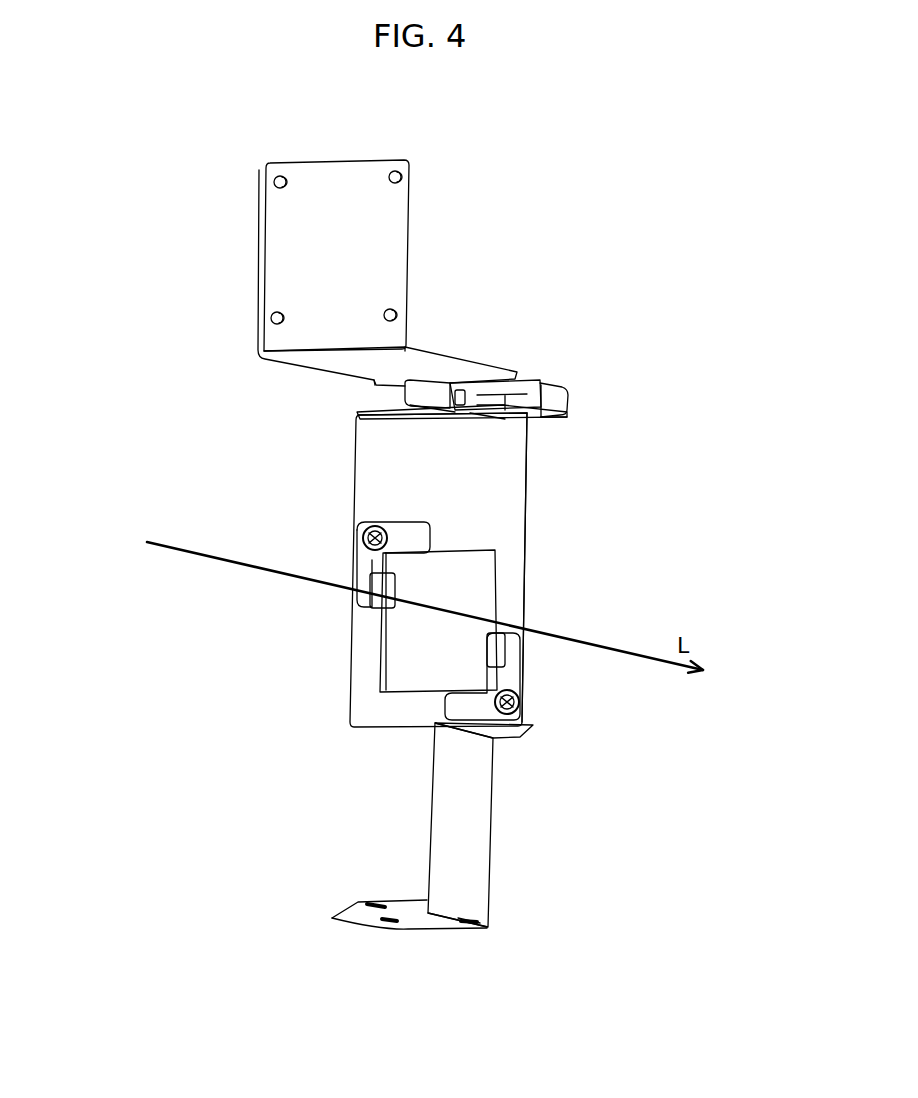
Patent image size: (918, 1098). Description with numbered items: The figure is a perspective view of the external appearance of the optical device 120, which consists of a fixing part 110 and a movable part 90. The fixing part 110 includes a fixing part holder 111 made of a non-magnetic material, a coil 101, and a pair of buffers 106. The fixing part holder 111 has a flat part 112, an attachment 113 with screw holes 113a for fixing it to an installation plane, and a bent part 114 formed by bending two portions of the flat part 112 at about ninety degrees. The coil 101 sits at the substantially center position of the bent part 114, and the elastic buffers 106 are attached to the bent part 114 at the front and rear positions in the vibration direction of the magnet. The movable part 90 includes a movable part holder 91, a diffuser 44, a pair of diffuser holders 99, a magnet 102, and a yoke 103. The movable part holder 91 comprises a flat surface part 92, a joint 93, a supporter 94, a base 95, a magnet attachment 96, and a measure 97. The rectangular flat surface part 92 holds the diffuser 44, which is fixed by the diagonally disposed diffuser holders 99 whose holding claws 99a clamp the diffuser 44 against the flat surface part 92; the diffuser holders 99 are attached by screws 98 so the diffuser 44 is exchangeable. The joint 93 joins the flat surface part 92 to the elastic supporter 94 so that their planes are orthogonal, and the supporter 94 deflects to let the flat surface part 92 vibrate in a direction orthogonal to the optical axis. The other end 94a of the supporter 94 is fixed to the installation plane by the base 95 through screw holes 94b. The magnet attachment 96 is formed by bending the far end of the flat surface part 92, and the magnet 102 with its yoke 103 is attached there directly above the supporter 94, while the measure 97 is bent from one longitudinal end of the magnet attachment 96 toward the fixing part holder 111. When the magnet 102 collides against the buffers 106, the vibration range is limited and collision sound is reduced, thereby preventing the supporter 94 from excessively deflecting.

The optical device 120 is at (100, 290).
The fixing part 110 is at (200, 332).
The fixing part holder 111 is at (613, 131).
The attachment 113 is at (367, 270).
The screw holes 113a is at (392, 172).
The flat part 112 is at (407, 354).
The bent part 114 is at (428, 398).
The coil 101 is at (483, 397).
The yoke 103 is at (497, 390).
The buffers 106 is at (553, 400).
The magnet 102 is at (497, 418).
The measure 97 is at (567, 412).
The magnet attachment 96 is at (408, 423).
The flat surface part 92 is at (478, 533).
The movable part 90 is at (287, 500).
The movable part holder 91 is at (748, 465).
The diffuser 44 is at (458, 572).
The screws 98 is at (362, 537).
The diffuser holders 99 is at (362, 595).
The holding claws 99a is at (362, 607).
The joint 93 is at (523, 725).
The supporter 94 is at (453, 800).
The other end 94a is at (467, 920).
The screw holes 94b is at (387, 920).
The base 95 is at (407, 913).